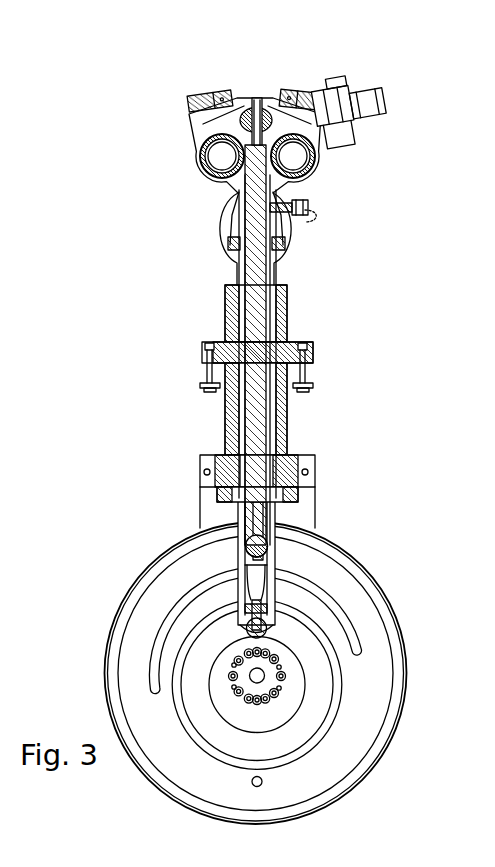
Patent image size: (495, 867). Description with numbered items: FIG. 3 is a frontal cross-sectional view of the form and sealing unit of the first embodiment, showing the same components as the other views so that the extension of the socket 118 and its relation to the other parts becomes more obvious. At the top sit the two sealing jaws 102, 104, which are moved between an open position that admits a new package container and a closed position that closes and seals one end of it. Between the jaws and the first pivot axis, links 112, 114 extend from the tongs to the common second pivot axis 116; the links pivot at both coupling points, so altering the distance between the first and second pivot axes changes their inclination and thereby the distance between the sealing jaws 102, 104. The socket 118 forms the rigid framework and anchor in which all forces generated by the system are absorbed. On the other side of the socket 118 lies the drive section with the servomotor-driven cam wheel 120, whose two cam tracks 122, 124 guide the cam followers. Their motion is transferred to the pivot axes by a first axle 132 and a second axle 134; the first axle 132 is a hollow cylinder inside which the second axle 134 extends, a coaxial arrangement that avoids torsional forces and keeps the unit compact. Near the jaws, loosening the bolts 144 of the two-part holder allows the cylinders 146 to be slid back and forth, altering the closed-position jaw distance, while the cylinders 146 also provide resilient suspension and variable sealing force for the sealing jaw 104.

The sealing jaw 102 is at (199, 92).
The sealing jaw 104 is at (298, 90).
The link 112 is at (278, 131).
The link 114 is at (224, 131).
The second pivot axis 116 is at (252, 105).
The socket 118 is at (207, 347).
The cam wheel 120 is at (380, 571).
The cam track 122 is at (310, 690).
The cam track 124 is at (373, 625).
The first axle 132 is at (267, 555).
The second axle 134 is at (252, 252).
The bolt 144 is at (338, 76).
The cylinder 146 is at (363, 105).